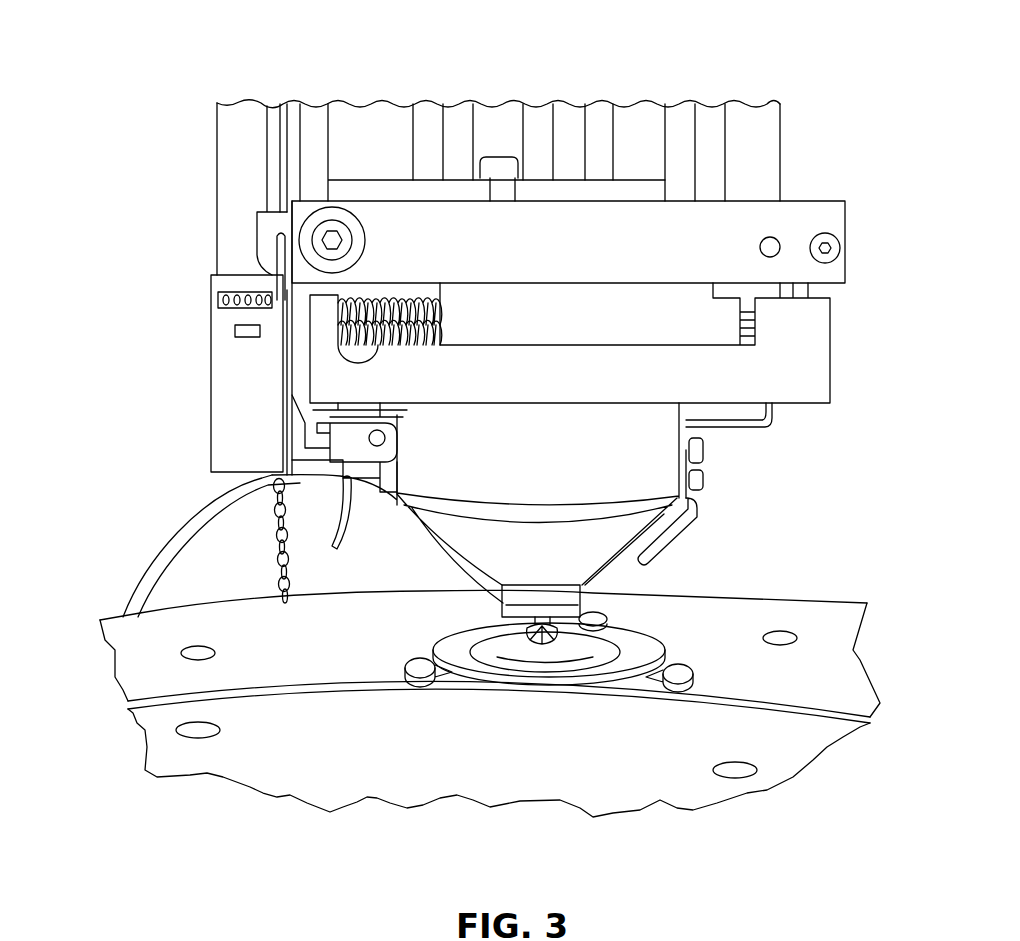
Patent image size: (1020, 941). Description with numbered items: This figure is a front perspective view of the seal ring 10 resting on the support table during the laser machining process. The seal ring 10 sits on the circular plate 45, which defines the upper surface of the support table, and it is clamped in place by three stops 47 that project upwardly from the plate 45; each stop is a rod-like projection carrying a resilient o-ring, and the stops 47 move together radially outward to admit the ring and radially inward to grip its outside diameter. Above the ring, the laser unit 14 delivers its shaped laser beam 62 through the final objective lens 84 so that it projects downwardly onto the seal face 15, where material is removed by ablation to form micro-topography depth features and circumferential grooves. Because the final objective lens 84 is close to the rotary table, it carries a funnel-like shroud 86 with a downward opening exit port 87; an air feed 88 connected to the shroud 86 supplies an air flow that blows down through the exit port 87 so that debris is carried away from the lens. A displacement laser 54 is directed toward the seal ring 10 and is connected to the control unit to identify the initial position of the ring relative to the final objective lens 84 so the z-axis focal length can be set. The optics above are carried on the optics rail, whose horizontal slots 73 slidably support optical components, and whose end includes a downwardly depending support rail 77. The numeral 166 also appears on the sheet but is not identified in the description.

The applicator assembly 14 is at (200, 121).
The guide posts 73 is at (458, 117).
The support post 77 is at (748, 133).
The mounting plate 84 is at (813, 220).
The control unit 54 is at (211, 325).
The guard shroud 88 is at (152, 577).
The housing 86 is at (658, 460).
The cone 87 is at (470, 587).
The nozzle 62 is at (527, 624).
The platform surface 15 is at (450, 650).
The base plate 45 is at (287, 773).
The ring 10 is at (640, 657).
The fasteners 47 is at (603, 612).
The component 166 is at (292, 930).